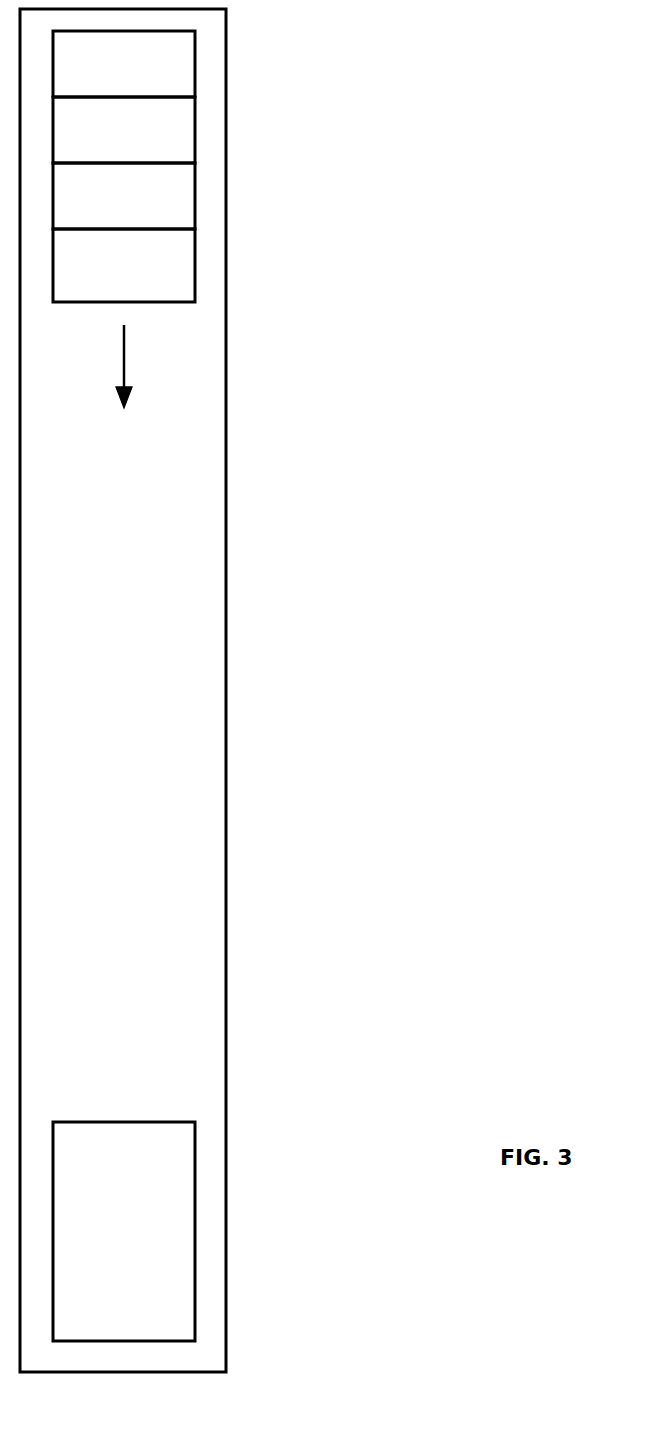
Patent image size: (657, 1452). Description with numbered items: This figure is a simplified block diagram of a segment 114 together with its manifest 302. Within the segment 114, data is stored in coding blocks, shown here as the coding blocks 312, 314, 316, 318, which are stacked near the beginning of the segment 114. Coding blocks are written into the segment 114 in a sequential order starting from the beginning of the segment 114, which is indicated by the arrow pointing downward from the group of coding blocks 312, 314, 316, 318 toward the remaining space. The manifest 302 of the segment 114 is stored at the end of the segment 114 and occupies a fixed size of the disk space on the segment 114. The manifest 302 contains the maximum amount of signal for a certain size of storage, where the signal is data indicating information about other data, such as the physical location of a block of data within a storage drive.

The segment 114 is at (225, 721).
The manifest 302 is at (196, 1229).
The coding block 312 is at (196, 63).
The coding block 314 is at (196, 135).
The coding block 316 is at (196, 194).
The coding block 318 is at (196, 268).